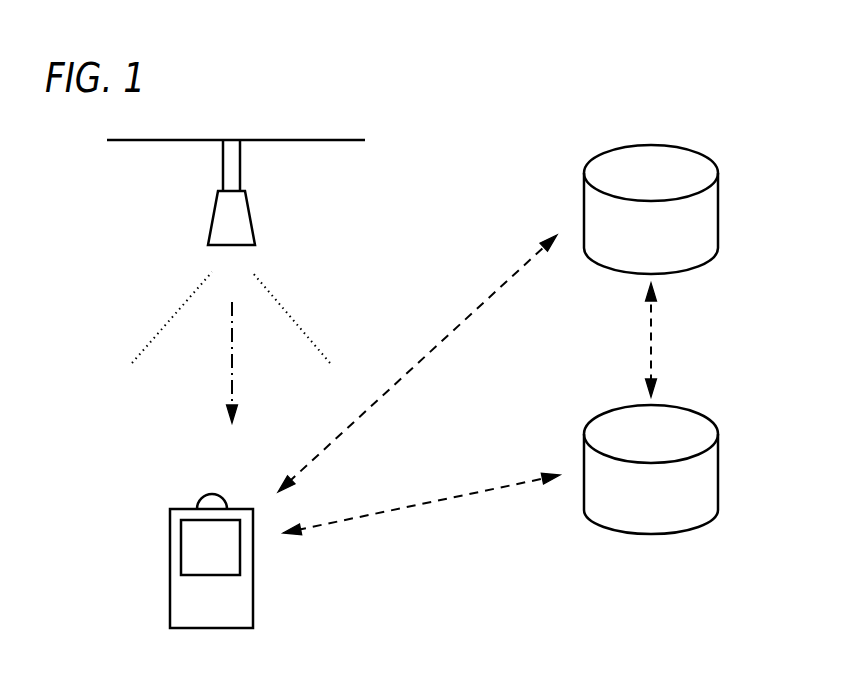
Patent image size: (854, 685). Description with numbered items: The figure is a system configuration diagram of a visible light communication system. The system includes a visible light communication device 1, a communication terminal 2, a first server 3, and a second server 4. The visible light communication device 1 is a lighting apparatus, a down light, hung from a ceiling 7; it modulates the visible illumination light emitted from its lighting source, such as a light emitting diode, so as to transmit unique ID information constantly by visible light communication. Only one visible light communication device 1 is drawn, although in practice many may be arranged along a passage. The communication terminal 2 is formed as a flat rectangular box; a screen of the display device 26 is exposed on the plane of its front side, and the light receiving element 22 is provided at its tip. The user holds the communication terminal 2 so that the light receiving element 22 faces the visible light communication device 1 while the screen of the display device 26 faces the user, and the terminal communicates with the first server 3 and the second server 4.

The visible light communication device 1 is at (243, 219).
The communication terminal 2 is at (177, 603).
The first server 3 is at (713, 199).
The second server 4 is at (713, 462).
The ceiling 7 is at (340, 141).
The light receiving element 22 is at (206, 503).
The display device 26 is at (185, 546).